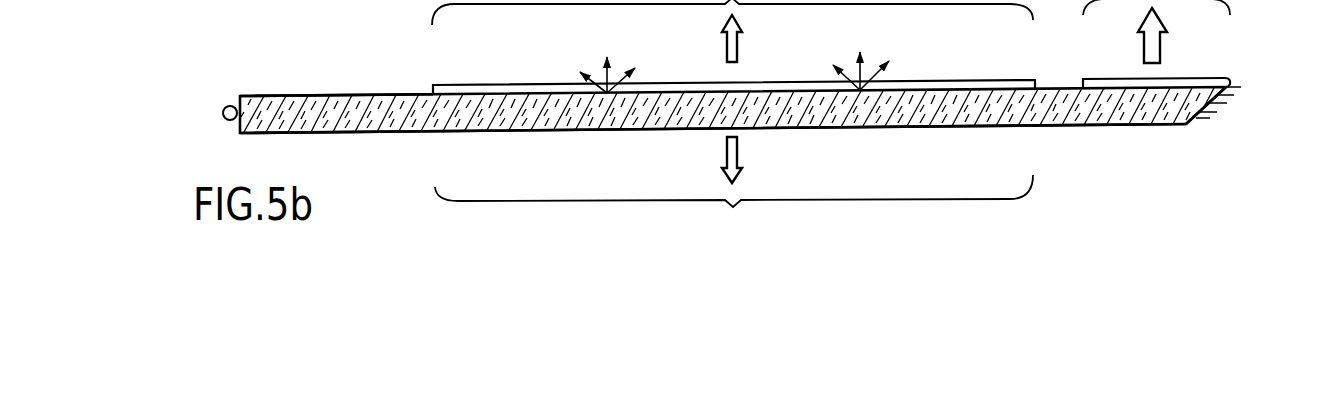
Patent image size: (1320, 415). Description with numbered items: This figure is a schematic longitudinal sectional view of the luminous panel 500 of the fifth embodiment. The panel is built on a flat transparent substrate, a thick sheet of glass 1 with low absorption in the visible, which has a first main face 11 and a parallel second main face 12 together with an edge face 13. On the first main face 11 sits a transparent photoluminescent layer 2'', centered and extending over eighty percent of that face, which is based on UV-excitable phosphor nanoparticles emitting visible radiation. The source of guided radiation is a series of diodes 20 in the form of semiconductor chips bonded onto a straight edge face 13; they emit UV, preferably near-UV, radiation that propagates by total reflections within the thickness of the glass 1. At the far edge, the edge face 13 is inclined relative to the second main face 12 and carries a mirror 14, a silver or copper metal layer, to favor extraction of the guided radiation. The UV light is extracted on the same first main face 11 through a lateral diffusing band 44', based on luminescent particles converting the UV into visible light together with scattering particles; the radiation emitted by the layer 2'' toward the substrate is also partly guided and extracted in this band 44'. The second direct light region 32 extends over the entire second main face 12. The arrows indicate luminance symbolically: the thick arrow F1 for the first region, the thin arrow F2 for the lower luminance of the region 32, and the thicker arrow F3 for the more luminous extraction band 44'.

The luminous panel 500 is at (256, 69).
The sheet of glass 1 is at (423, 132).
The first main face 11 is at (379, 94).
The second main face 12 is at (590, 133).
The edge face 13 is at (1208, 122).
The mirror 14 is at (1234, 96).
The diodes 20 is at (222, 111).
The transparent photoluminescent layer 2'' is at (734, 69).
The lateral diffusing band 44' is at (1156, 60).
The second direct light region 32 is at (734, 207).
The thick arrow F1 is at (737, 42).
The thin arrow F2 is at (737, 152).
The thicker arrow F3 is at (1160, 45).